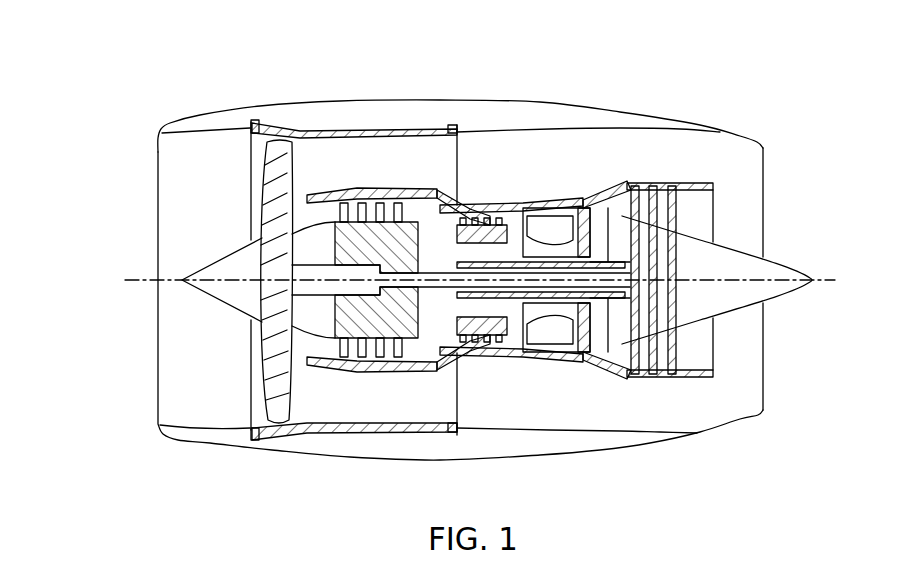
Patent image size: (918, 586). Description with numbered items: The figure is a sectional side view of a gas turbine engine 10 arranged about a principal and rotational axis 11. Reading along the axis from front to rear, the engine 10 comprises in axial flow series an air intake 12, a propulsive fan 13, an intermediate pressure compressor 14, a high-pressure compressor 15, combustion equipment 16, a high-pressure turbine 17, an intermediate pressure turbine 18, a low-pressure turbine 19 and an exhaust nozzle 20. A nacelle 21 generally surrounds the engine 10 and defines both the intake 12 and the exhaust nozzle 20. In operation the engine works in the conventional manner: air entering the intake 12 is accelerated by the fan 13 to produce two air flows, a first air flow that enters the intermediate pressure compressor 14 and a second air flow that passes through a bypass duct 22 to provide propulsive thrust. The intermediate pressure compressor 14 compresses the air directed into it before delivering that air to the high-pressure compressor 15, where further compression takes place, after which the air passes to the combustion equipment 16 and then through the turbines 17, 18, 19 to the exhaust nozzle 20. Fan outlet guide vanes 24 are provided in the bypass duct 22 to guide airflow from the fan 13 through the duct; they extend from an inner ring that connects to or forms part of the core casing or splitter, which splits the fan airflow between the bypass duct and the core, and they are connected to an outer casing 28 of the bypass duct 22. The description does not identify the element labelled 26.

The gas turbine engine 10 is at (131, 167).
The principal and rotational axis 11 is at (165, 270).
The air intake 12 is at (218, 136).
The propulsive fan 13 is at (263, 380).
The intermediate pressure compressor 14 is at (398, 355).
The high-pressure compressor 15 is at (488, 210).
The combustion equipment 16 is at (535, 342).
The high-pressure turbine 17 is at (585, 345).
The intermediate pressure turbine 18 is at (618, 205).
The low-pressure turbine 19 is at (640, 370).
The exhaust nozzle 20 is at (766, 402).
The nacelle 21 is at (595, 100).
The bypass duct 22 is at (426, 169).
The fan outlet guide vanes 24 is at (352, 157).
The fan casing front portion 26 is at (302, 140).
The outer casing 28 is at (370, 133).